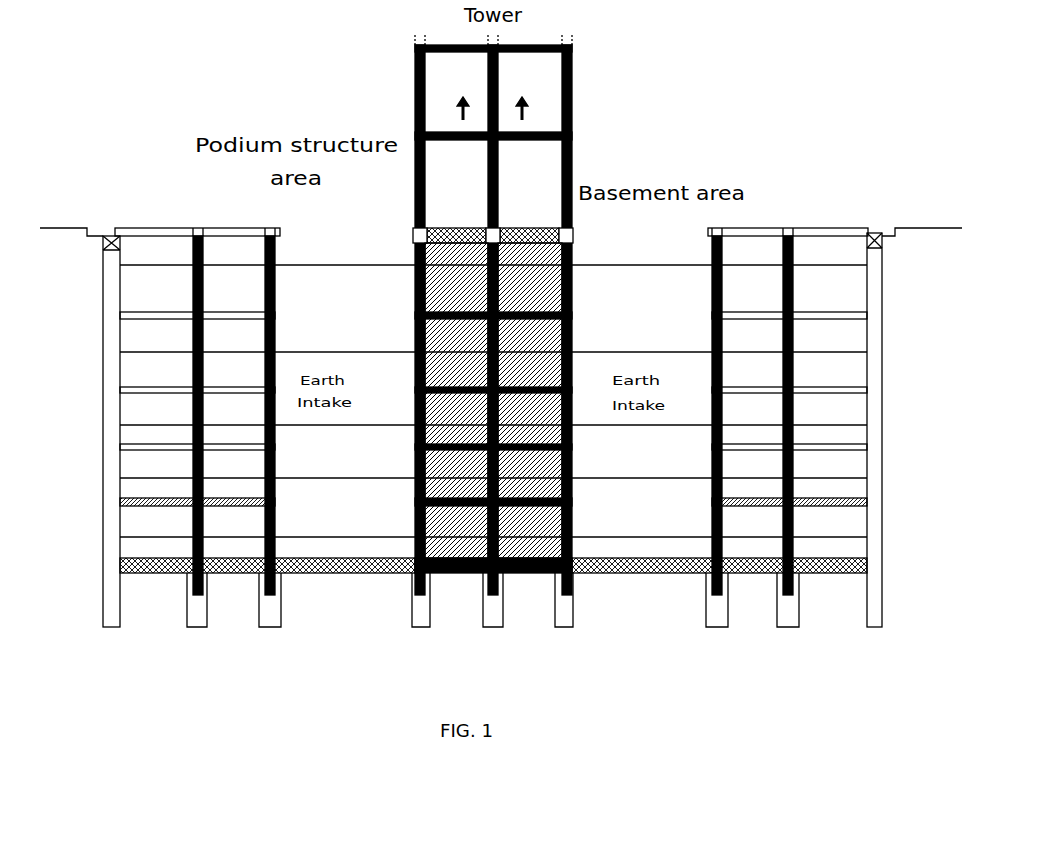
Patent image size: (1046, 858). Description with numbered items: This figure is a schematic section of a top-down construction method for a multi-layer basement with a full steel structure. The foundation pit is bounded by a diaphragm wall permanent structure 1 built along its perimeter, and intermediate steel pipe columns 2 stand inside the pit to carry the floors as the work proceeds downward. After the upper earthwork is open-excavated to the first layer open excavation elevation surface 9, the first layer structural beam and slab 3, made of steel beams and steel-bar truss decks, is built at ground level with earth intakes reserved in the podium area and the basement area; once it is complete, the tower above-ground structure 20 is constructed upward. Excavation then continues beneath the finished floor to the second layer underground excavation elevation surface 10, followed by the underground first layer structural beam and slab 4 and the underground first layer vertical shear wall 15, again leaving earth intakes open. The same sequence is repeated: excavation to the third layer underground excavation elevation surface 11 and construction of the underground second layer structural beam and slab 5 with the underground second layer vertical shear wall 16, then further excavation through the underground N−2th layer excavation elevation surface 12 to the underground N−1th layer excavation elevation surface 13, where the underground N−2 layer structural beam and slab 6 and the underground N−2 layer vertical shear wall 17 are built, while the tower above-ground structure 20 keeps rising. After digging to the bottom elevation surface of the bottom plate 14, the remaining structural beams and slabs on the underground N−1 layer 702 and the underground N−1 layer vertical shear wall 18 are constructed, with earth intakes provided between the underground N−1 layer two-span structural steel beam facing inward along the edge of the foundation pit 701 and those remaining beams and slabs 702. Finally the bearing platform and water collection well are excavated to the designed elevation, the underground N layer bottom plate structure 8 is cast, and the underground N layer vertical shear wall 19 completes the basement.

The diaphragm wall permanent structure 1 is at (113, 340).
The intermediate steel pipe column 2 is at (270, 240).
The first layer structural beam and slab 3 is at (132, 232).
The underground first layer structural beam and slab 4 is at (133, 316).
The underground second layer structural beam and slab 5 is at (133, 388).
The underground N−2 layer structural beam and slab 6 is at (133, 445).
The underground N−1 layer two-span structural steel beam facing inward along the edg 701 is at (130, 500).
The underground N layer bottom plate structure 8 is at (118, 560).
The first layer open excavation elevation surface 9 is at (848, 265).
The second layer underground excavation elevation surface 10 is at (848, 352).
The third layer underground excavation elevation surface 11 is at (848, 425).
The underground N−2th layer excavation elevation surface 12 is at (848, 478).
The underground N−1th layer excavation elevation surface 13 is at (848, 537).
The bottom elevation surface of the bottom plate 14 is at (603, 573).
The underground first layer vertical shear wall 15 is at (442, 278).
The underground second layer vertical shear wall 16 is at (442, 350).
The underground N−2 layer vertical shear wall 17 is at (442, 410).
The underground N−1 layer vertical shear wall 18 is at (445, 462).
The remaining structural beams and slabs on the underground N−1 layer 702 is at (440, 502).
The underground N layer vertical shear wall 19 is at (442, 550).
The tower above-ground structure 20 is at (550, 132).